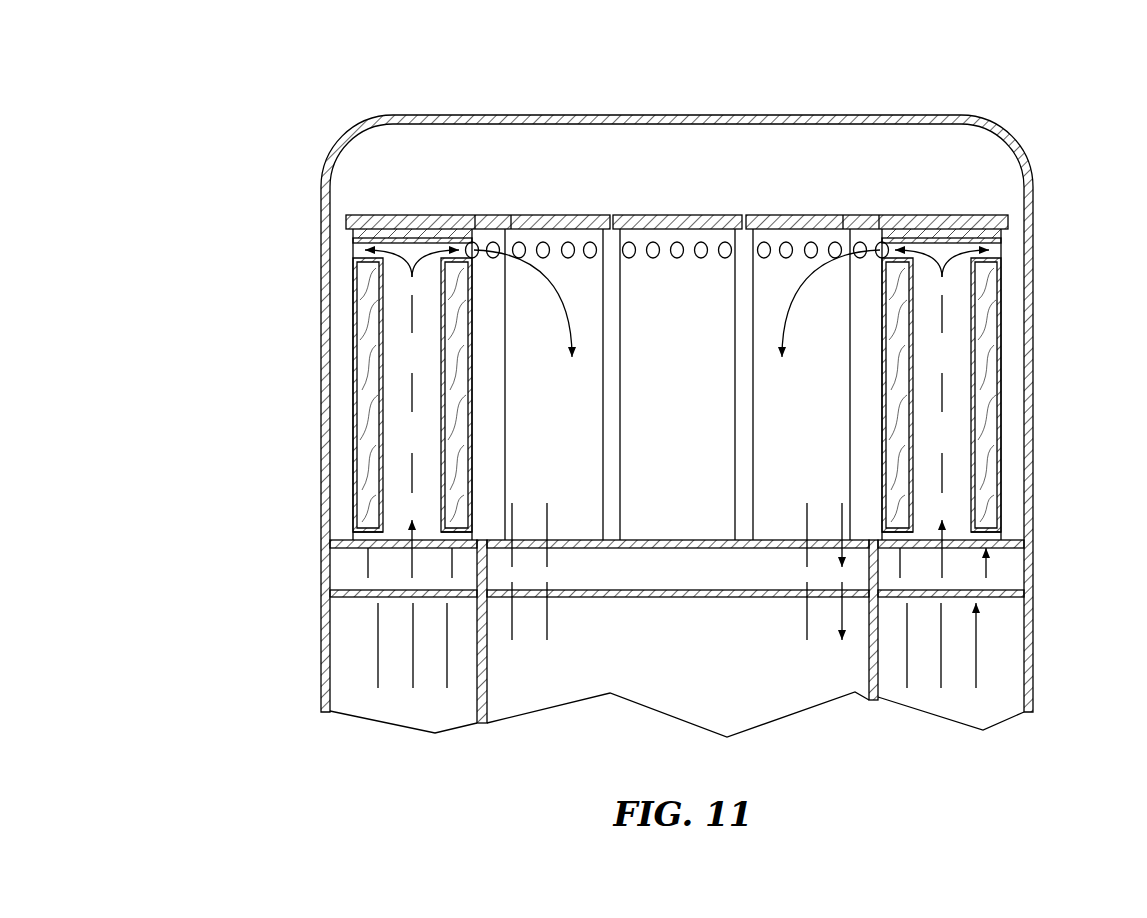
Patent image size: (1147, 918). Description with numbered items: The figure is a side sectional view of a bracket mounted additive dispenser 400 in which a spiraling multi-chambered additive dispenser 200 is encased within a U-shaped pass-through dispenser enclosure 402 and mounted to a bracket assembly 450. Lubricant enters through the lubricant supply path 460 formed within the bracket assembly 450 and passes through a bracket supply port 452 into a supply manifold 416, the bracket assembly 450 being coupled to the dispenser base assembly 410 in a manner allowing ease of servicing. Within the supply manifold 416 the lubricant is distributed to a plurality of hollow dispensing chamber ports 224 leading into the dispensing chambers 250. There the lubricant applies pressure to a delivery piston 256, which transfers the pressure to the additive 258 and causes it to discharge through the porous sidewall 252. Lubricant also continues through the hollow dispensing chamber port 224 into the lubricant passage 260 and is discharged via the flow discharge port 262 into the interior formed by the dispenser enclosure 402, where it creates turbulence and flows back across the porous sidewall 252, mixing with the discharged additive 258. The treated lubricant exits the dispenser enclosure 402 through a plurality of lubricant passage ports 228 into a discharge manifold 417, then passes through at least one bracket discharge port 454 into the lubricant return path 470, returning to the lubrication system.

The bracket mounted additive dispenser 400 is at (317, 88).
The spiraling multi-chambered additive dispenser 200 is at (347, 187).
The dispenser enclosure 402 is at (1010, 135).
The dispensing chambers 250 is at (972, 207).
The flow discharge port 262 is at (1003, 242).
The lubricant passage 260 is at (950, 325).
The porous sidewall 252 is at (1003, 383).
The additive 258 is at (985, 427).
The delivery piston 256 is at (1003, 535).
The supply manifold 416 is at (1017, 568).
The hollow dispensing chamber port 224 is at (956, 554).
The discharge manifold 417 is at (690, 573).
The lubricant passage ports 228 is at (530, 528).
The dispenser base assembly 410 is at (313, 565).
The bracket discharge port 454 is at (530, 598).
The bracket supply port 452 is at (957, 603).
The bracket assembly 450 is at (1033, 653).
The lubricant supply path 460 is at (957, 707).
The lubricant return path 470 is at (682, 678).